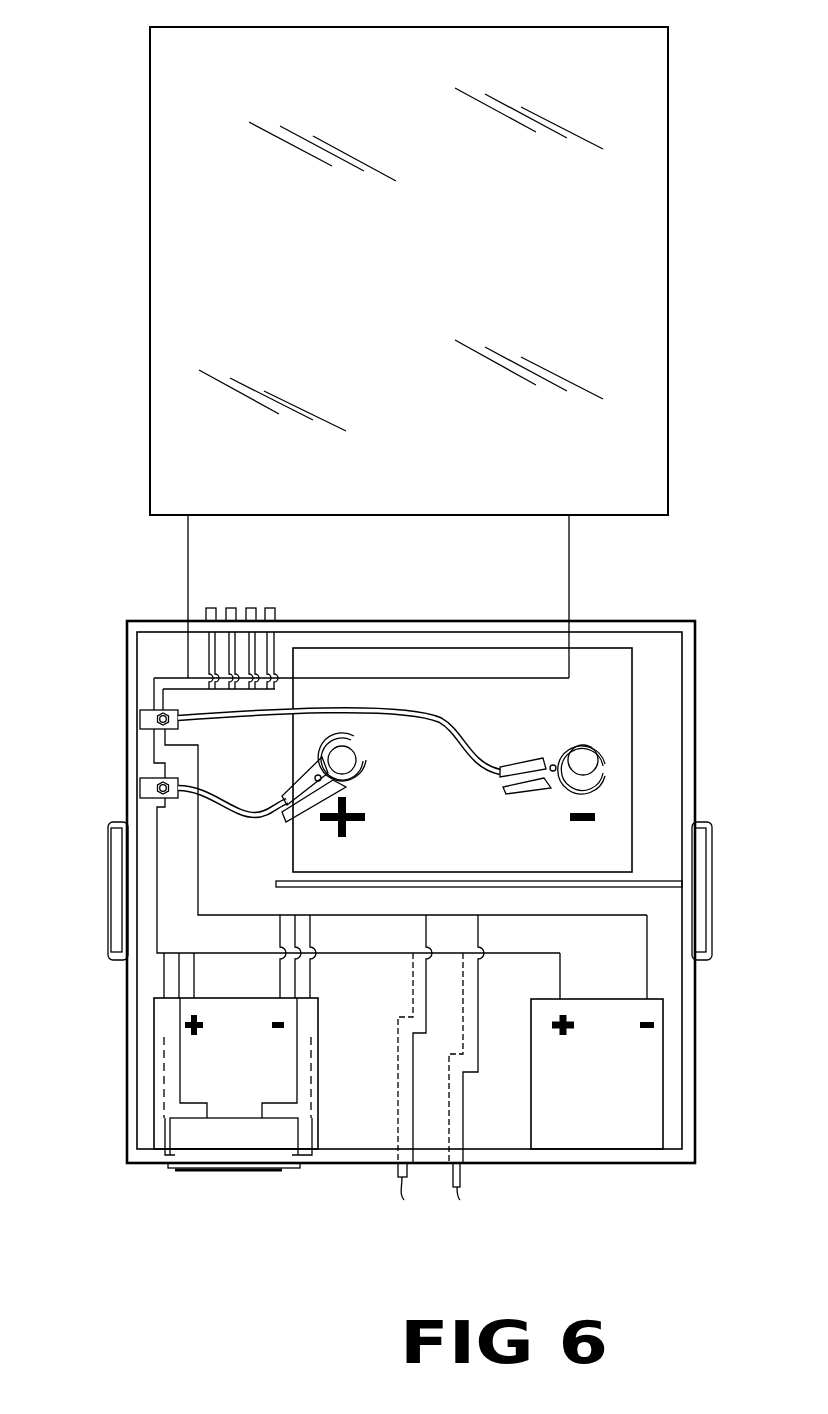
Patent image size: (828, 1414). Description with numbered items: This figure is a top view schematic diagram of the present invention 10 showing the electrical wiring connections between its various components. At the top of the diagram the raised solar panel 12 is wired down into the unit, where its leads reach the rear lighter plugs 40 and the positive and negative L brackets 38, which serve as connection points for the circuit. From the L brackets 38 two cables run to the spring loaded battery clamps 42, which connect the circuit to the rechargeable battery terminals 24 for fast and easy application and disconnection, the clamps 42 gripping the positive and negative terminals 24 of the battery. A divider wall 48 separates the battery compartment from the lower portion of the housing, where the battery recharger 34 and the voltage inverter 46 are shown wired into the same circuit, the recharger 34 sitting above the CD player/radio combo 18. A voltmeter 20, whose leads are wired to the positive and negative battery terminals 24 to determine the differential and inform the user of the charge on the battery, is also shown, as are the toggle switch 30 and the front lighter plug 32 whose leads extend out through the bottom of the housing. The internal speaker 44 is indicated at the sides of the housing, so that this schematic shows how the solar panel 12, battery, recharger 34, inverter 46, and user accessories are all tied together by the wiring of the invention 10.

The present invention 10 is at (708, 482).
The solar panel 12 is at (403, 303).
The CD player/radio combo 18 is at (173, 1172).
The voltmeter 20 is at (230, 1139).
The battery terminals 24 is at (342, 757).
The toggle switch 30 is at (457, 1190).
The front lighter plug 32 is at (405, 1190).
The battery recharger 34 is at (252, 1078).
The positive and negative L brackets 38 is at (140, 720).
The rear lighter plugs 40 is at (302, 587).
The battery clamps 42 is at (540, 785).
The internal speaker 44 is at (130, 1093).
The voltage inverter 46 is at (567, 1102).
The divider wall 48 is at (657, 875).